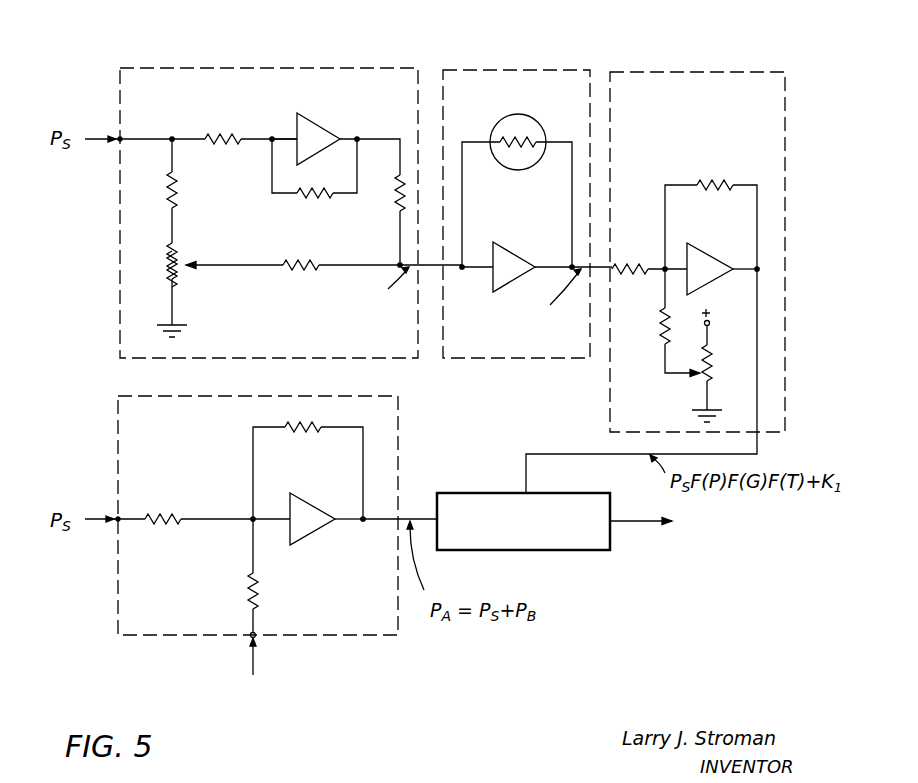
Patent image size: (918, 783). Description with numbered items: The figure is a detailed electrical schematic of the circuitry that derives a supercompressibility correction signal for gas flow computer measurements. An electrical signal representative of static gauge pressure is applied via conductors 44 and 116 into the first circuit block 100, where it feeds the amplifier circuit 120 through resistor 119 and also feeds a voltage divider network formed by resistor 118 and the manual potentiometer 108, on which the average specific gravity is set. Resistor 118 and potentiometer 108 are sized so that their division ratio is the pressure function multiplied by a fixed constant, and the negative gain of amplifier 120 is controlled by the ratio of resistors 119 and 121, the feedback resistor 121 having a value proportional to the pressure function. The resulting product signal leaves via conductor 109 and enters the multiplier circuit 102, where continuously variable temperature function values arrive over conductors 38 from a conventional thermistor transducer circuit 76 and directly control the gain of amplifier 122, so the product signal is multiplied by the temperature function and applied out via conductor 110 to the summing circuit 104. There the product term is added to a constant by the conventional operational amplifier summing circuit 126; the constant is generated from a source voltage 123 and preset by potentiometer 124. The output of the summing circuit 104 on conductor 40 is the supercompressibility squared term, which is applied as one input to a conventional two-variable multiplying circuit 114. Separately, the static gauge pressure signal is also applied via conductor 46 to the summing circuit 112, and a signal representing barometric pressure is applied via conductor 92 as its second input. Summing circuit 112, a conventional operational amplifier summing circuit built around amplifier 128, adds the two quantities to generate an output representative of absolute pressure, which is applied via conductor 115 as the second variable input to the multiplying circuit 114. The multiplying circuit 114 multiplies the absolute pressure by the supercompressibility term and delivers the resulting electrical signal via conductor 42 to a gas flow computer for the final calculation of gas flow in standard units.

The amplifier circuit block 100 is at (305, 68).
The multiplier circuit 102 is at (518, 70).
The summing circuit 104 is at (710, 72).
The conductor 44 is at (98, 150).
The conductor 116 is at (146, 137).
The resistor R1 119 is at (251, 142).
The resistor R2 118 is at (181, 200).
The manual potentiometer R3 108 is at (181, 257).
The amplifier 120 is at (318, 124).
The resistor 121 is at (311, 186).
The conductor 109 is at (429, 270).
The thermistor transducer circuit 76 is at (546, 131).
The conductors 38 is at (558, 191).
The amplifier 122 is at (511, 251).
The conductor 110 is at (599, 272).
The operational amplifier summing circuit 126 is at (714, 258).
The potentiometer R4 124 is at (700, 381).
The source voltage 123 is at (712, 325).
The conductor 40 is at (760, 448).
The two-variable multiplying circuit 114 is at (465, 493).
The conductor 115 is at (427, 523).
The conductor 42 is at (637, 524).
The summing circuit 112 is at (155, 637).
The conductor 46 is at (98, 530).
The amplifier 128 is at (318, 533).
The conductor 92 is at (255, 660).